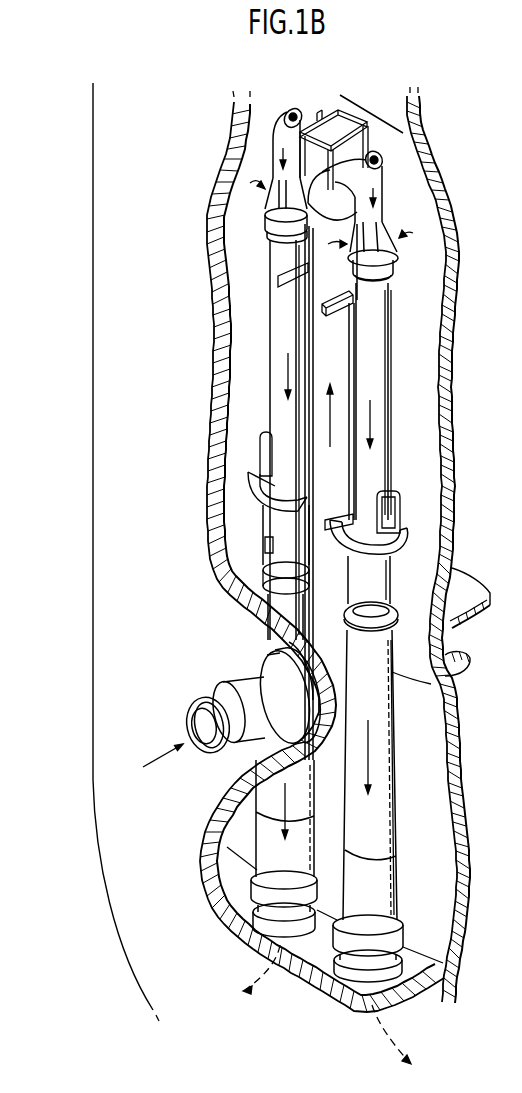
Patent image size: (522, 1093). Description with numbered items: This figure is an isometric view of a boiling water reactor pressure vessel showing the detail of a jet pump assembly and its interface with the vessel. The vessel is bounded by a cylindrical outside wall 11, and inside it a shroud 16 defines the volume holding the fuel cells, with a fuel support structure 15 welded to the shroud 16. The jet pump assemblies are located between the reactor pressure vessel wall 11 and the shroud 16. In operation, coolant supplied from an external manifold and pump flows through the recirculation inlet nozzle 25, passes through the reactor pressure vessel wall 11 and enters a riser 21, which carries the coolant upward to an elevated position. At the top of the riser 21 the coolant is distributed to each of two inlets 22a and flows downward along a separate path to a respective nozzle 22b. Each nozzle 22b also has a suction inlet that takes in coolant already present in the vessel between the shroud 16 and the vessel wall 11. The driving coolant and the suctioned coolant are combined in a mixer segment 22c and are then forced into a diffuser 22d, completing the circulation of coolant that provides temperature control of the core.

The outside wall 11 is at (100, 862).
The fuel support structure 15 is at (453, 645).
The shroud 16 is at (446, 403).
The riser 21 is at (313, 344).
The inlet 22a is at (388, 197).
The nozzle 22b is at (395, 252).
The mixer segment 22c is at (376, 369).
The diffuser 22d is at (390, 794).
The recirculation inlet nozzle 25 is at (190, 706).